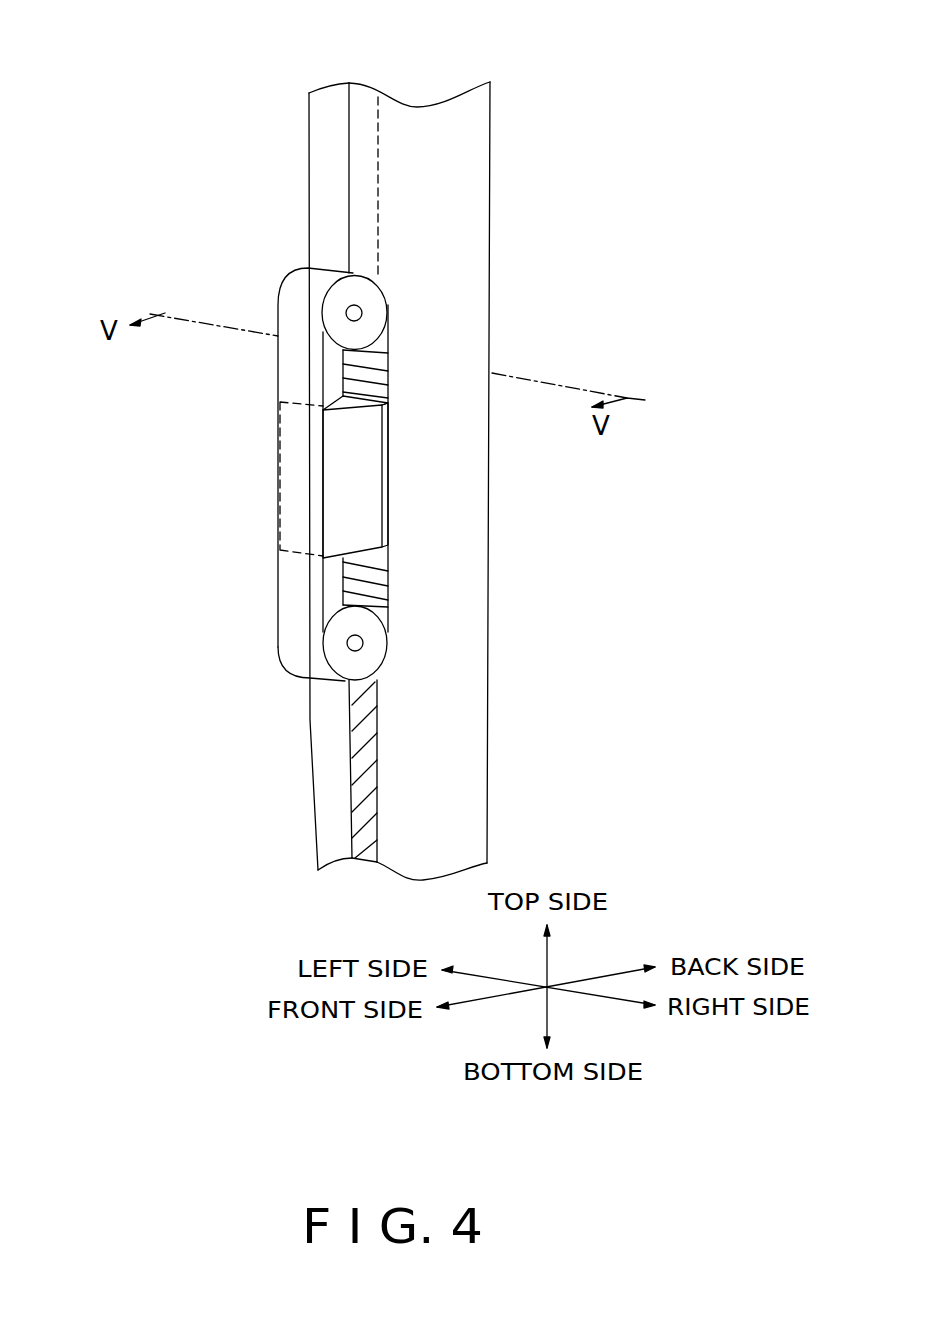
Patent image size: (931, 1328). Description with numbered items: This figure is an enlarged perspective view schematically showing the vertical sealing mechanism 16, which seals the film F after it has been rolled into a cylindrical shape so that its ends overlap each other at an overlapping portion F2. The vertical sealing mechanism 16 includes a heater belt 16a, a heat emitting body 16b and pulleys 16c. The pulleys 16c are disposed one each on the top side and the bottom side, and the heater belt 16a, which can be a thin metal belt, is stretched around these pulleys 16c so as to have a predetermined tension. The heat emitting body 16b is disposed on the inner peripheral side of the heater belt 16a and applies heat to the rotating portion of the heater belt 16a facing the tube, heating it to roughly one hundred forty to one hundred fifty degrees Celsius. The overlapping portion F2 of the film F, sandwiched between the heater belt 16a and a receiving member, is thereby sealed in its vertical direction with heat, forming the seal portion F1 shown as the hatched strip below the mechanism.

The film F is at (383, 107).
The seal portion F1 is at (360, 780).
The overlapping portion F2 is at (368, 180).
The vertical sealing mechanism 16 is at (209, 474).
The heater belt 16a is at (292, 363).
The heat emitting body 16b is at (295, 496).
The pulleys 16c is at (348, 340).